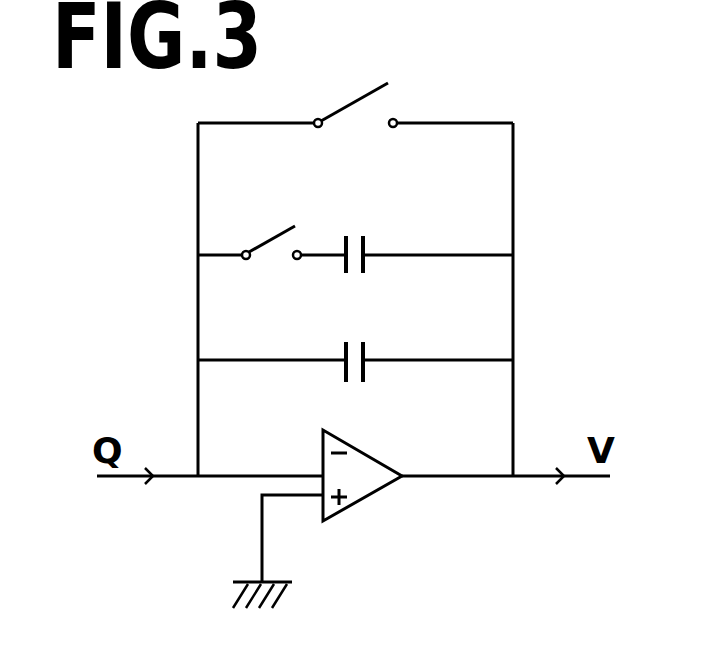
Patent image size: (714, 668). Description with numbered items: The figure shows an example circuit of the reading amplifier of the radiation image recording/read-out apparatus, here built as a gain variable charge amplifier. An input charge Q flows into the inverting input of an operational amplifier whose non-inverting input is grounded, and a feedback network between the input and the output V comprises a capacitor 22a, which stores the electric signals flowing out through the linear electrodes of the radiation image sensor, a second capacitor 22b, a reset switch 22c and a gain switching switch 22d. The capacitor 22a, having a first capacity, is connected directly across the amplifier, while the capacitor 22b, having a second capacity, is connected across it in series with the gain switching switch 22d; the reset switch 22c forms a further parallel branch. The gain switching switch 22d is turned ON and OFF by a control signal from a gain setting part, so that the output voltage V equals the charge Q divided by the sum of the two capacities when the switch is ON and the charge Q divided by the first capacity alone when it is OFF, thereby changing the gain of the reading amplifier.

The reset switch 22c is at (400, 93).
The gain switching switch 22d is at (297, 214).
The capacitor 22b is at (353, 280).
The capacitor 22a is at (353, 383).